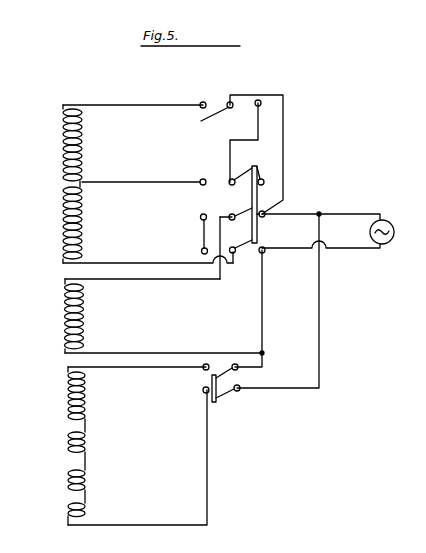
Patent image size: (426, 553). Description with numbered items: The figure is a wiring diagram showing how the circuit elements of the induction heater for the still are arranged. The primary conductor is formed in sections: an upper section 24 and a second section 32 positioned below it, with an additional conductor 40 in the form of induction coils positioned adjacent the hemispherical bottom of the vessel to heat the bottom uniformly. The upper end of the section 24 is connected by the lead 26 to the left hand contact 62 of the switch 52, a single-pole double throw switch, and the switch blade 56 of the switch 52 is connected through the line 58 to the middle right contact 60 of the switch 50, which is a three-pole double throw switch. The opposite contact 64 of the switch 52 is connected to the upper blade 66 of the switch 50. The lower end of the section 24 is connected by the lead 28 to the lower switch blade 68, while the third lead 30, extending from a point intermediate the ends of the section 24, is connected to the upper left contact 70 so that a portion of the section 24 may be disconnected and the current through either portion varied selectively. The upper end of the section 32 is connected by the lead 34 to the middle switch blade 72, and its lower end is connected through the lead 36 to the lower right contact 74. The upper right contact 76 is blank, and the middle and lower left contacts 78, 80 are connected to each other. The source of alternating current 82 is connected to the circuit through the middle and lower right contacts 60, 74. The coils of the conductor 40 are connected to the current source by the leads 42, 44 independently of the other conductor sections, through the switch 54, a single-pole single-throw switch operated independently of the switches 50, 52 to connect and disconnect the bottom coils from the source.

The upper conductor section 24 is at (60, 186).
The lead 26 is at (141, 104).
The lead 28 is at (122, 262).
The third lead 30 is at (134, 181).
The second conductor section 32 is at (55, 318).
The lead 34 is at (141, 282).
The lead 36 is at (151, 352).
The additional conductor 40 is at (92, 446).
The lead 42 is at (135, 369).
The lead 44 is at (167, 523).
The three-pole double throw switch 50 is at (273, 192).
The single-pole double throw switch 52 is at (239, 99).
The single-pole single-throw switch 54 is at (220, 402).
The switch blade 56 is at (215, 121).
The line 58 is at (286, 121).
The middle right contact 60 is at (264, 216).
The left hand contact 62 is at (204, 102).
The opposite contact 64 is at (261, 101).
The upper blade 66 is at (237, 178).
The lower switch blade 68 is at (240, 262).
The upper left contact 70 is at (204, 179).
The middle switch blade 72 is at (244, 207).
The lower right contact 74 is at (265, 253).
The upper right contact 76 is at (263, 178).
The middle left contact 78 is at (192, 228).
The lower left contact 80 is at (193, 250).
The source of alternating current 82 is at (388, 250).